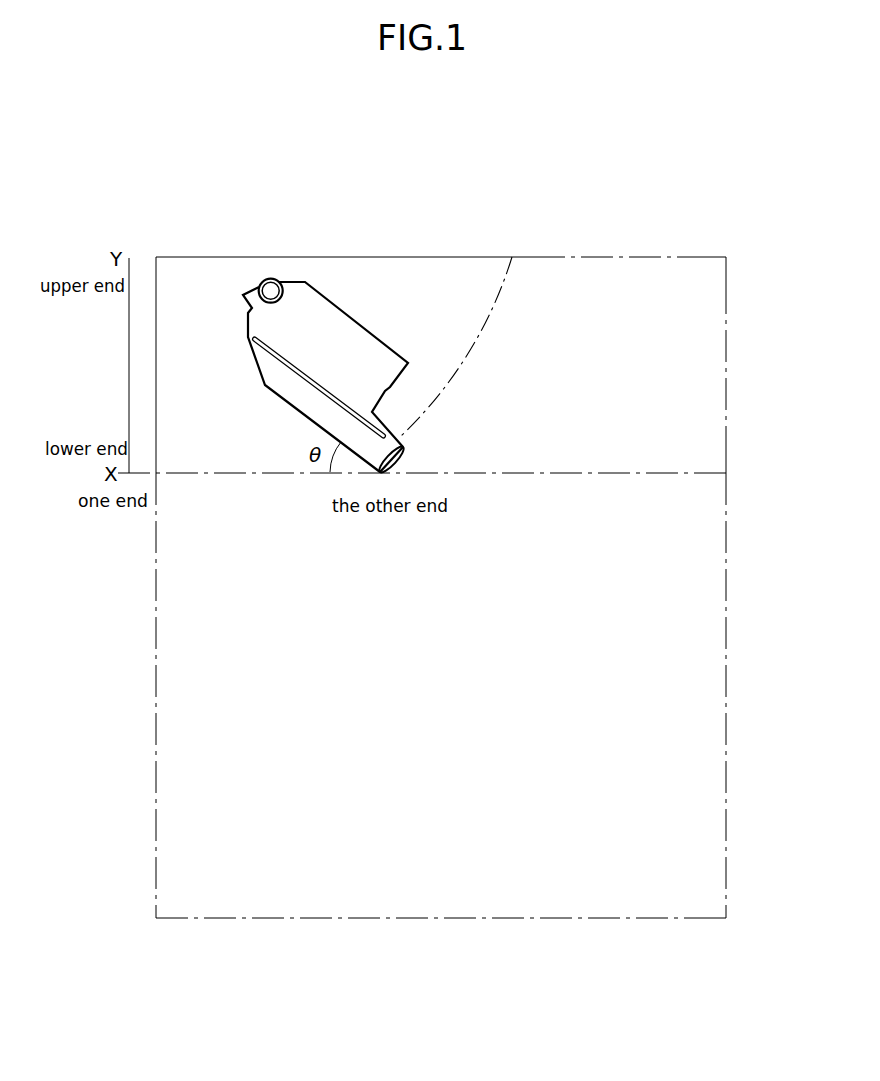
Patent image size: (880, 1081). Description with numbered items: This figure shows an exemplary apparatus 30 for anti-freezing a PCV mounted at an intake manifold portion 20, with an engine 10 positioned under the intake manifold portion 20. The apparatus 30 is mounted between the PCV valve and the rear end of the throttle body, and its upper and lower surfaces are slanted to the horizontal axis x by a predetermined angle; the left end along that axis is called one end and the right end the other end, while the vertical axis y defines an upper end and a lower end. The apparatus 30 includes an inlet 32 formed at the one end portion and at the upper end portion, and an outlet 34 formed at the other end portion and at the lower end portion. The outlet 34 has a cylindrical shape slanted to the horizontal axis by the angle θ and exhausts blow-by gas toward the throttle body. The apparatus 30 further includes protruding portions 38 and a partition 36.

The engine 10 is at (697, 687).
The intake manifold portion 20 is at (697, 360).
The apparatus for anti-freezing a PCV 30 is at (328, 278).
The inlet 32 is at (269, 279).
The outlet 34 is at (403, 457).
The partition 36 is at (347, 403).
The protruding portions 38 is at (288, 360).